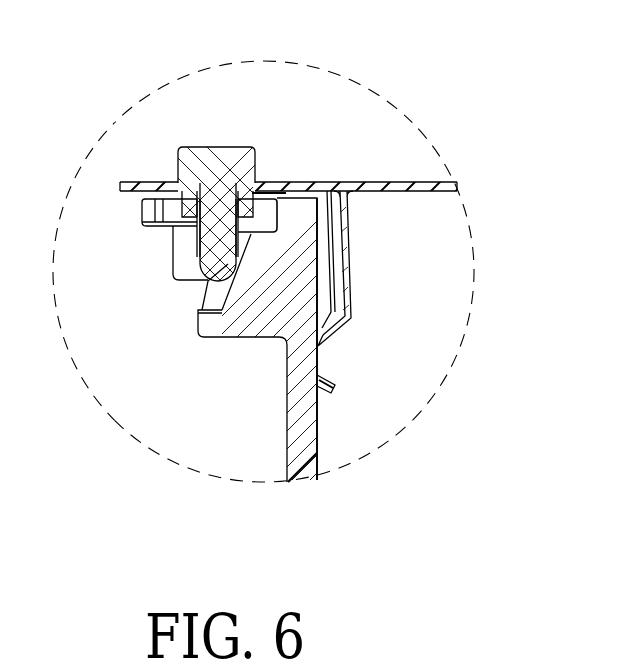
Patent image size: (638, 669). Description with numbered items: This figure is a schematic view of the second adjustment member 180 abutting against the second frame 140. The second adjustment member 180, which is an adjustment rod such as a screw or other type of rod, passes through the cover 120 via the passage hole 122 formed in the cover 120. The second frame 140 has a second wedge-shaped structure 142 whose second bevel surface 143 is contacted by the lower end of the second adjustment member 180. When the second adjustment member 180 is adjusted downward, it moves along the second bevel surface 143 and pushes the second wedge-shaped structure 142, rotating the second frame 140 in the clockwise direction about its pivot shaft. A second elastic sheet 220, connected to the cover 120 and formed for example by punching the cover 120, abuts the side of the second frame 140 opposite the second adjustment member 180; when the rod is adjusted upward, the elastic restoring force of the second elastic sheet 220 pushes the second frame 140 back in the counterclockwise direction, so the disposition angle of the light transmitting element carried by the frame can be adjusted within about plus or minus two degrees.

The cover 120 is at (408, 183).
The passage hole 122 is at (197, 186).
The second frame 140 is at (309, 470).
The second wedge-shaped structure 142 is at (247, 315).
The second bevel surface 143 is at (208, 300).
The second adjustment member 180 is at (215, 172).
The second elastic sheet 220 is at (349, 256).